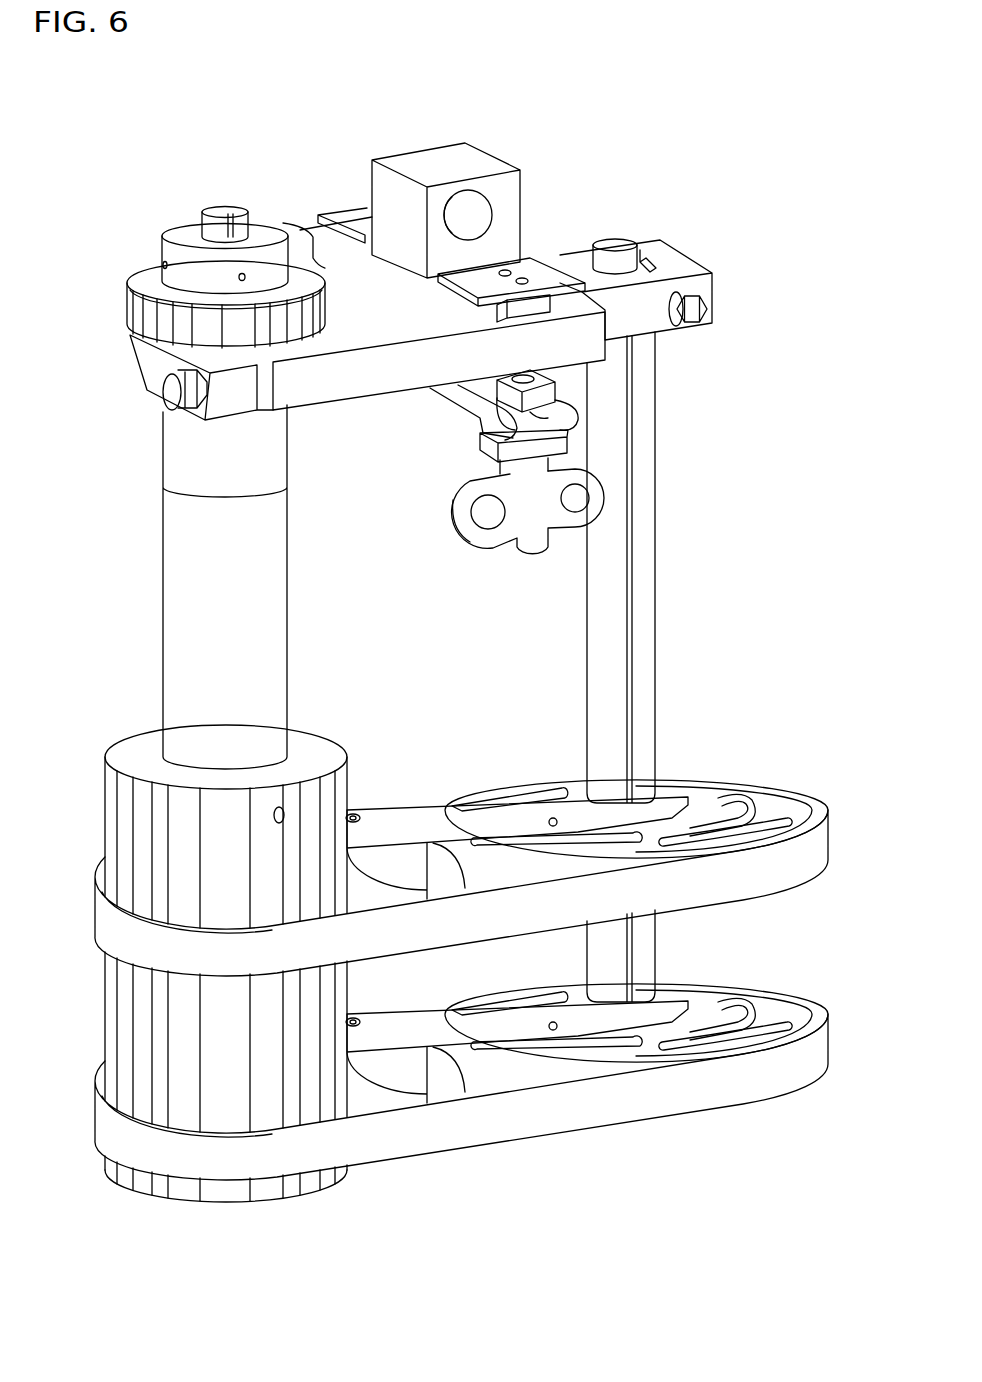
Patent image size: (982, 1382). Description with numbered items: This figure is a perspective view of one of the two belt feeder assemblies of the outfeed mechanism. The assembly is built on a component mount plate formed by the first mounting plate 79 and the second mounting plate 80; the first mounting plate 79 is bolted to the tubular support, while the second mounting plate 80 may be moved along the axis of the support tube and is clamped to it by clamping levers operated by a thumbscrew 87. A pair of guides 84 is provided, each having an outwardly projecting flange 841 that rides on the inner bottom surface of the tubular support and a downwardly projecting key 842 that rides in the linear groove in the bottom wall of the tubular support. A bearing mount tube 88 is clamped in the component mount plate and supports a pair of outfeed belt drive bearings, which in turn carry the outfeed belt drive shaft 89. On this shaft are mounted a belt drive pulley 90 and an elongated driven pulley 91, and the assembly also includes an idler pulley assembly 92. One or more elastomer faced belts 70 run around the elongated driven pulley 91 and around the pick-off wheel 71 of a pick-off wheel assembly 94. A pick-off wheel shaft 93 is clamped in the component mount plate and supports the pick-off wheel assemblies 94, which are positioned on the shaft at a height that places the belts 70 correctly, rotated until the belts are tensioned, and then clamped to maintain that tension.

The elastomer faced belt 70 is at (486, 933).
The pick-off wheel 71 is at (800, 826).
The first mounting plate 79 is at (683, 272).
The second mounting plate 80 is at (716, 284).
The guide 84 is at (547, 272).
The outwardly projecting flange 841 is at (483, 296).
The downwardly projecting key 842 is at (530, 308).
The thumbscrew 87 is at (533, 510).
The bearing mount tube 88 is at (183, 614).
The outfeed belt drive shaft 89 is at (216, 212).
The belt drive pulley 90 is at (175, 254).
The elongated driven pulley 91 is at (133, 756).
The idler pulley assembly 92 is at (280, 222).
The pick-off wheel shaft 93 is at (657, 531).
The pick-off wheel assembly 94 is at (705, 820).